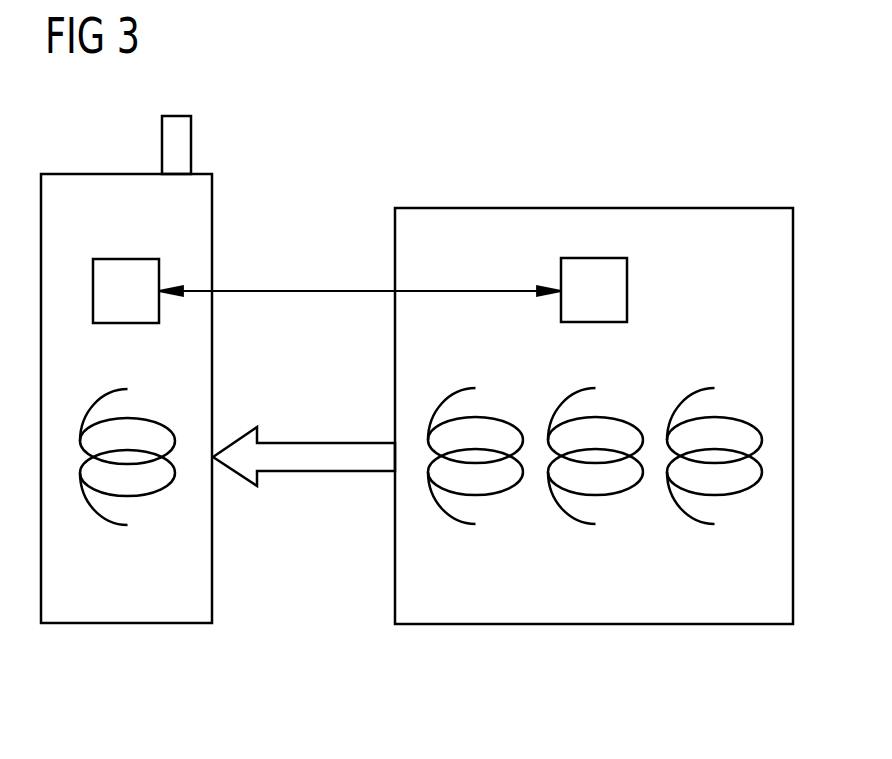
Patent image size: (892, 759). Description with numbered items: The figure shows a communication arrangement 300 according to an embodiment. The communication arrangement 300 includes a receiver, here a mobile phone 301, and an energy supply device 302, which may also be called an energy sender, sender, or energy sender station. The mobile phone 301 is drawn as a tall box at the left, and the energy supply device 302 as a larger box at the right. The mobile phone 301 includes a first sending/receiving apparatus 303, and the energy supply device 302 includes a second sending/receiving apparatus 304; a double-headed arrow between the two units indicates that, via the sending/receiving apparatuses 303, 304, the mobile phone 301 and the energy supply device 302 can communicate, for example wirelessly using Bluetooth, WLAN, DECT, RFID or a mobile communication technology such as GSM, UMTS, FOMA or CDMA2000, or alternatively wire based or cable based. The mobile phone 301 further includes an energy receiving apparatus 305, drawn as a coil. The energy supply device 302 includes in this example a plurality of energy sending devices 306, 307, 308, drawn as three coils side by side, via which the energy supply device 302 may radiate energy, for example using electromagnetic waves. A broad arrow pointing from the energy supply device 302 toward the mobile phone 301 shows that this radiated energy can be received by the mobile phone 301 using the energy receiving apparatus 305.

The communication arrangement 300 is at (710, 155).
The mobile phone 301 is at (127, 623).
The energy supply device 302 is at (593, 624).
The first sending/receiving apparatus 303 is at (127, 258).
The second sending/receiving apparatus 304 is at (627, 291).
The energy receiving apparatus 305 is at (132, 420).
The energy sending device 306 is at (492, 418).
The energy sending device 307 is at (610, 418).
The energy sending device 308 is at (728, 418).